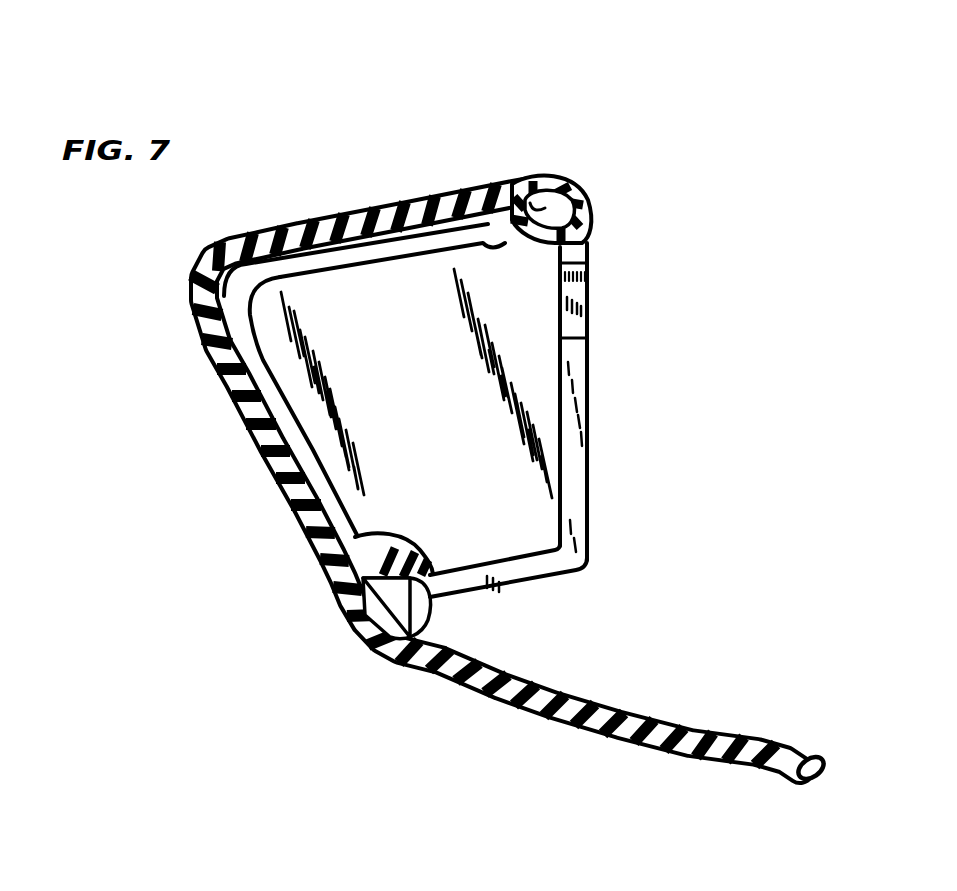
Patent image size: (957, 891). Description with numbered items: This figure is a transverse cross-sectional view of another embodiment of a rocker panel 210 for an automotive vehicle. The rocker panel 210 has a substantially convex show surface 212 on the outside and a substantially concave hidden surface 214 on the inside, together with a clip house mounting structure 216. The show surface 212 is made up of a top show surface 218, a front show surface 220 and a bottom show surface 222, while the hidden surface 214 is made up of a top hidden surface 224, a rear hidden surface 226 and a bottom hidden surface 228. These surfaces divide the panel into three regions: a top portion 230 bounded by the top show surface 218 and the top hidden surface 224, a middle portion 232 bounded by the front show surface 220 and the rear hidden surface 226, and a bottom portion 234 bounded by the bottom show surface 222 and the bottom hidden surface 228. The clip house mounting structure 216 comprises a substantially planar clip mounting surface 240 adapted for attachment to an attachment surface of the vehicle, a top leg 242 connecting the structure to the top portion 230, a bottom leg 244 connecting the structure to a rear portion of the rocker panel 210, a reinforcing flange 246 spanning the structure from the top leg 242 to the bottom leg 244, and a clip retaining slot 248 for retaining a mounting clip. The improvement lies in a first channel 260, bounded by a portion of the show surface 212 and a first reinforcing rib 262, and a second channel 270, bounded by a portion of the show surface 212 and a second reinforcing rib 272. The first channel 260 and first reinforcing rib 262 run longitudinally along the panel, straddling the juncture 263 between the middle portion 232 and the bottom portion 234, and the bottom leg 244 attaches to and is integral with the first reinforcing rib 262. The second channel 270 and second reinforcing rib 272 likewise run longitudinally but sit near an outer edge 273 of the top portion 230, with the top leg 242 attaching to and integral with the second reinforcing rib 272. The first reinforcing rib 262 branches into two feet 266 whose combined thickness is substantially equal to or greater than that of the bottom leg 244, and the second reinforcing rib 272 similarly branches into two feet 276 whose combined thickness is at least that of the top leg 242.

The rocker panel 210 is at (597, 217).
The show surface 212 is at (209, 359).
The hidden surface 214 is at (624, 709).
The clip house mounting structure 216 is at (590, 497).
The top show surface 218 is at (286, 222).
The front show surface 220 is at (248, 439).
The bottom show surface 222 is at (473, 688).
The top hidden surface 224 is at (311, 249).
The rear hidden surface 226 is at (304, 468).
The bottom hidden surface 228 is at (709, 731).
The top portion 230 is at (392, 213).
The middle portion 232 is at (318, 543).
The bottom portion 234 is at (588, 722).
The clip mounting surface 240 is at (592, 385).
The top leg 242 is at (575, 267).
The bottom leg 244 is at (463, 574).
The reinforcing flange 246 is at (425, 389).
The clip retaining slot 248 is at (593, 318).
The first channel 260 is at (360, 605).
The first reinforcing rib 262 is at (385, 627).
The juncture 263 is at (395, 642).
The feet 266 is at (381, 565).
The second channel 270 is at (548, 181).
The second reinforcing rib 272 is at (590, 250).
The outer edge 273 is at (580, 182).
The feet 276 is at (472, 204).